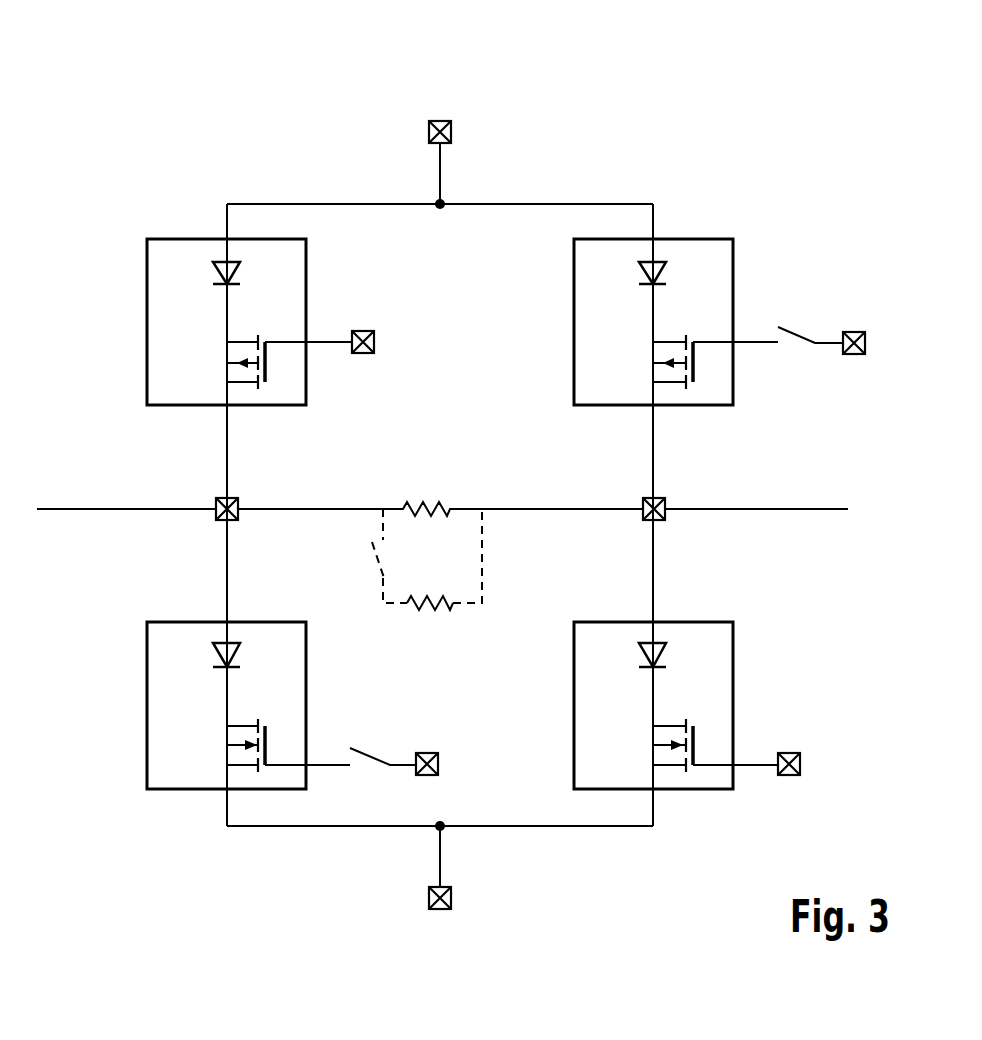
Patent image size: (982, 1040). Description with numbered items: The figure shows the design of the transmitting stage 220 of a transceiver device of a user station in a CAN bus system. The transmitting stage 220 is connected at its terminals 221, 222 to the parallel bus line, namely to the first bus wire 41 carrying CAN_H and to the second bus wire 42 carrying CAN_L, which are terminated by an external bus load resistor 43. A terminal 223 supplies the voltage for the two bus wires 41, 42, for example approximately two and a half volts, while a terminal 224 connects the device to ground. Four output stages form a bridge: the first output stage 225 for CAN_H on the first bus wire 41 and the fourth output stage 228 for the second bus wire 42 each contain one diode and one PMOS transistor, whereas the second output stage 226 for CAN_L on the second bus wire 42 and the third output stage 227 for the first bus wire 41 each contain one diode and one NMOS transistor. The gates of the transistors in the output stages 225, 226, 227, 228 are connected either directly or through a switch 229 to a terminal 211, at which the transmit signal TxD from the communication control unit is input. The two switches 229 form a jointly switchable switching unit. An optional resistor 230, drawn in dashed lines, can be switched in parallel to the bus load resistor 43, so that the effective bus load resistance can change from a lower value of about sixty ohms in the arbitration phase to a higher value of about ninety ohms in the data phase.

The transmitting stage 220 is at (680, 93).
The terminal 223 is at (440, 121).
The terminal 224 is at (452, 898).
The first output stage 225 is at (178, 239).
The second output stage 226 is at (703, 622).
The third output stage 227 is at (178, 622).
The fourth output stage 228 is at (703, 239).
The terminal 211 is at (363, 331).
The switch 229 is at (795, 327).
The terminal 221 is at (221, 497).
The terminal 222 is at (662, 497).
The first bus wire 41 is at (93, 508).
The second bus wire 42 is at (793, 508).
The bus load resistor 43 is at (432, 500).
The optional resistor 230 is at (452, 604).